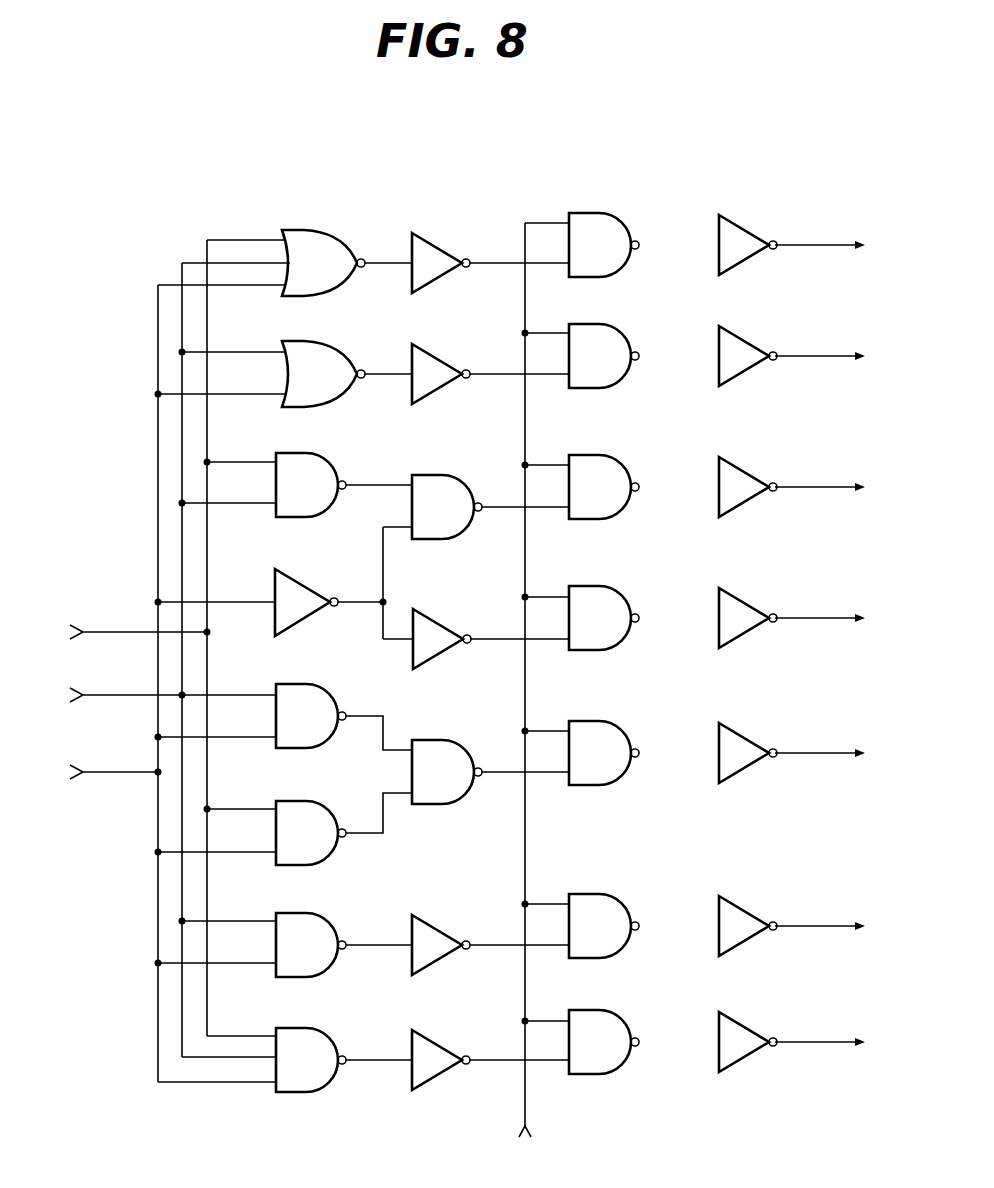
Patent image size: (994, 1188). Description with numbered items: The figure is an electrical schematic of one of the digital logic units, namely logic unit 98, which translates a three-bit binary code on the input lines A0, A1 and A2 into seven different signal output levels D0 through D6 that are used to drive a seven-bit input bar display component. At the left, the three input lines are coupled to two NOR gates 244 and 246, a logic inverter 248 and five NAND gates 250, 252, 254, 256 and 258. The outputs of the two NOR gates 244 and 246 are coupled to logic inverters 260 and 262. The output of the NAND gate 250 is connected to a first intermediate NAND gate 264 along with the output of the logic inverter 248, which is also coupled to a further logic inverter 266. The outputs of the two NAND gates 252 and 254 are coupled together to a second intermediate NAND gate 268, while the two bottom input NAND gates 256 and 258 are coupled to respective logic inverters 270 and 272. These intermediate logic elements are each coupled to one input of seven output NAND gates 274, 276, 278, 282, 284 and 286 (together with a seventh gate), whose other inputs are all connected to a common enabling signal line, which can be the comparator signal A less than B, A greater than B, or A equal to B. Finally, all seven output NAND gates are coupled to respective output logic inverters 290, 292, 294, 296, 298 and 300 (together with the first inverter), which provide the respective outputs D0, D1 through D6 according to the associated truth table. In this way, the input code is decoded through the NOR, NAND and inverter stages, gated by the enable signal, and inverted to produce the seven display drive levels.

The logic unit 98 is at (470, 182).
The NOR gate 244 is at (325, 230).
The NOR gate 246 is at (318, 343).
The logic inverter 248 is at (290, 578).
The NAND gate 250 is at (330, 453).
The NAND gate 252 is at (305, 684).
The NAND gate 254 is at (312, 801).
The NAND gate 256 is at (318, 913).
The NAND gate 258 is at (300, 1028).
The logic inverter 260 is at (438, 250).
The logic inverter 262 is at (438, 360).
The first intermediate NAND gate 264 is at (437, 477).
The logic inverter 266 is at (432, 616).
The second intermediate NAND gate 268 is at (437, 740).
The logic inverter 270 is at (438, 929).
The logic inverter 272 is at (453, 1040).
The output NAND gate 274 is at (608, 213).
The output NAND gate 276 is at (627, 325).
The output NAND gate 278 is at (617, 453).
The output NAND gate 282 is at (612, 721).
The output NAND gate 284 is at (607, 892).
The output NAND gate 286 is at (613, 1010).
The logic inverter 290 is at (752, 345).
The logic inverter 292 is at (748, 470).
The logic inverter 294 is at (757, 605).
The logic inverter 296 is at (752, 735).
The logic inverter 298 is at (745, 905).
The logic inverter 300 is at (753, 1028).